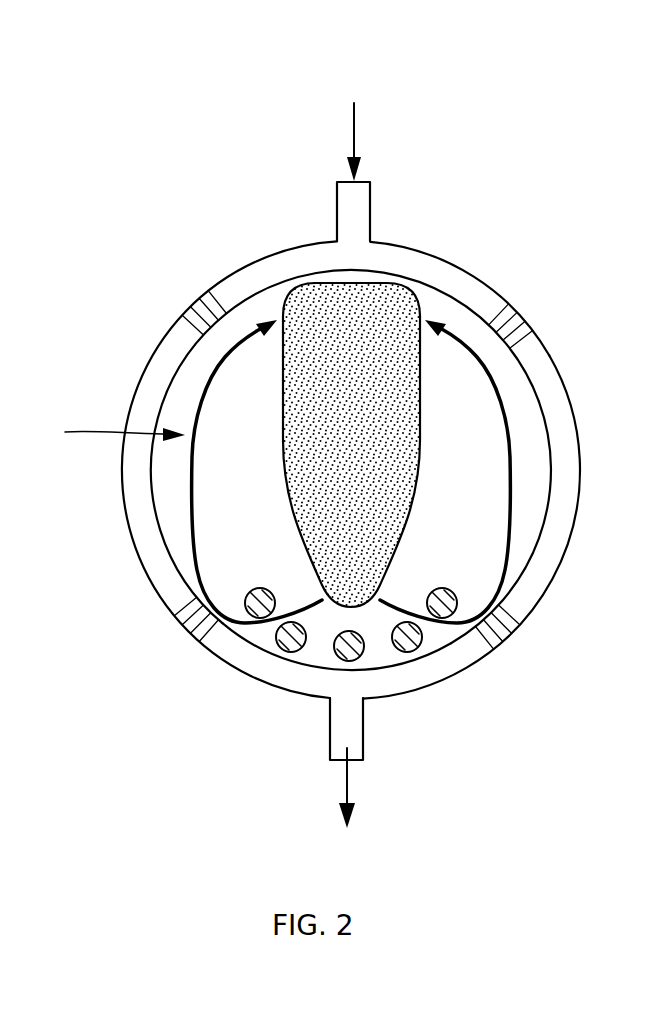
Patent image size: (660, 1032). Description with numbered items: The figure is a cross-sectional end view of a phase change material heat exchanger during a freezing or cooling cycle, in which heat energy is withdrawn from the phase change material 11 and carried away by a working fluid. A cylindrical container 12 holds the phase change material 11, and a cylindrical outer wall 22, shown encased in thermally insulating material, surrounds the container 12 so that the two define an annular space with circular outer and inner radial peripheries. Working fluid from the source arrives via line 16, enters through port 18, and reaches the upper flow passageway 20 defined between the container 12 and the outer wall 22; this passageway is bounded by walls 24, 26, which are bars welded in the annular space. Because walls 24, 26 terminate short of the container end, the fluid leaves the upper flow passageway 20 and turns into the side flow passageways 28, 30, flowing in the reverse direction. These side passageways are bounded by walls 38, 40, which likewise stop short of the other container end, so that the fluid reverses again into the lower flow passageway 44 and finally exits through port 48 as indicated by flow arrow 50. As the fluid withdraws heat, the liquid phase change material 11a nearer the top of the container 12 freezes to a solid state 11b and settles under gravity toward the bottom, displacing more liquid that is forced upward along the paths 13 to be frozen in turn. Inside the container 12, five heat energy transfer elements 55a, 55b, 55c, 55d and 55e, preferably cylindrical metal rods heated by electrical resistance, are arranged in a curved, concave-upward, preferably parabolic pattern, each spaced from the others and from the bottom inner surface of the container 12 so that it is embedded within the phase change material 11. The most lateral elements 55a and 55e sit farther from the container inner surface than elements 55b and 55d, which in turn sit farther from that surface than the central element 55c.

The phase change material 11 is at (109, 428).
The liquid phase change material 11a is at (250, 552).
The solid phase change material 11b is at (318, 488).
The container 12 is at (535, 390).
The paths 13 is at (205, 398).
The line 16 is at (357, 122).
The port 18 is at (370, 203).
The upper flow passageway 20 is at (423, 262).
The outer wall 22 is at (573, 405).
The wall 24 is at (527, 317).
The wall 26 is at (197, 303).
The side flow passageway 28 is at (565, 483).
The side flow passageway 30 is at (138, 490).
The wall 38 is at (507, 638).
The wall 40 is at (188, 623).
The lower flow passageway 44 is at (285, 677).
The port 48 is at (363, 740).
The flow arrow 50 is at (348, 787).
The heat energy transfer element 55a is at (256, 618).
The heat energy transfer element 55b is at (279, 646).
The heat energy transfer element 55c is at (336, 657).
The heat energy transfer element 55d is at (418, 648).
The heat energy transfer element 55e is at (457, 598).